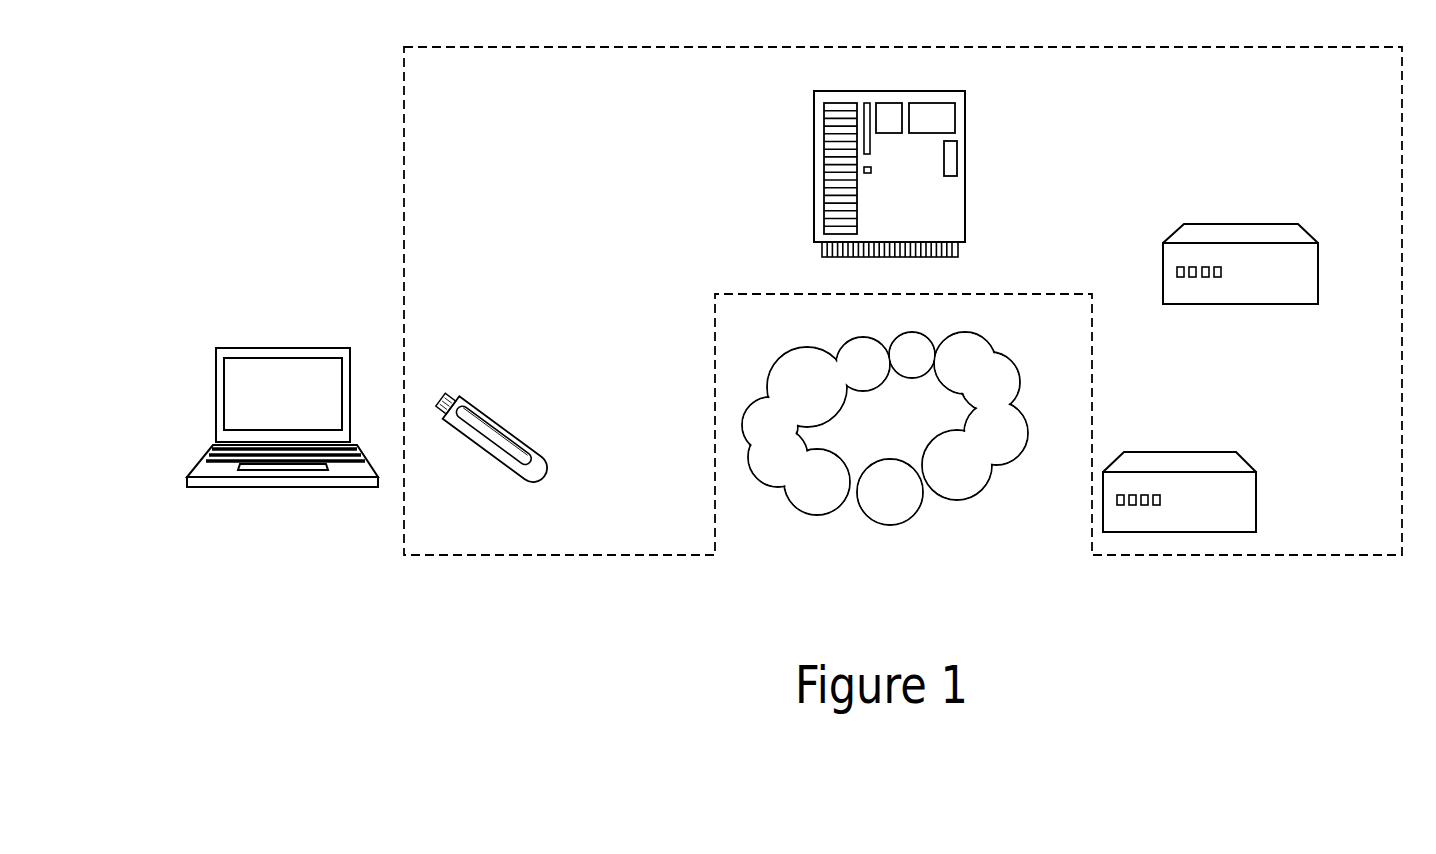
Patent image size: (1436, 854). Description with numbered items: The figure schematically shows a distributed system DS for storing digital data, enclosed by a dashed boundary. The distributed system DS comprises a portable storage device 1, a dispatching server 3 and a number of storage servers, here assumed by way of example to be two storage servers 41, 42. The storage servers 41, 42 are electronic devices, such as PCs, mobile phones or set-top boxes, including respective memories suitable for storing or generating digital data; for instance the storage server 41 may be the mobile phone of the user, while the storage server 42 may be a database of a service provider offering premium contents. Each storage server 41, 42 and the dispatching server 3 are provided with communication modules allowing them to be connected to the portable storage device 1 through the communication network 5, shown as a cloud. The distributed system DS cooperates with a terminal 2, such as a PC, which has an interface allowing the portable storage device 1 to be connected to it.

The distributed system DS is at (404, 121).
The portable storage device 1 is at (549, 461).
The terminal 2 is at (217, 393).
The dispatching server 3 is at (813, 176).
The communication network 5 is at (885, 428).
The storage server 41 is at (1318, 274).
The storage server 42 is at (1257, 502).